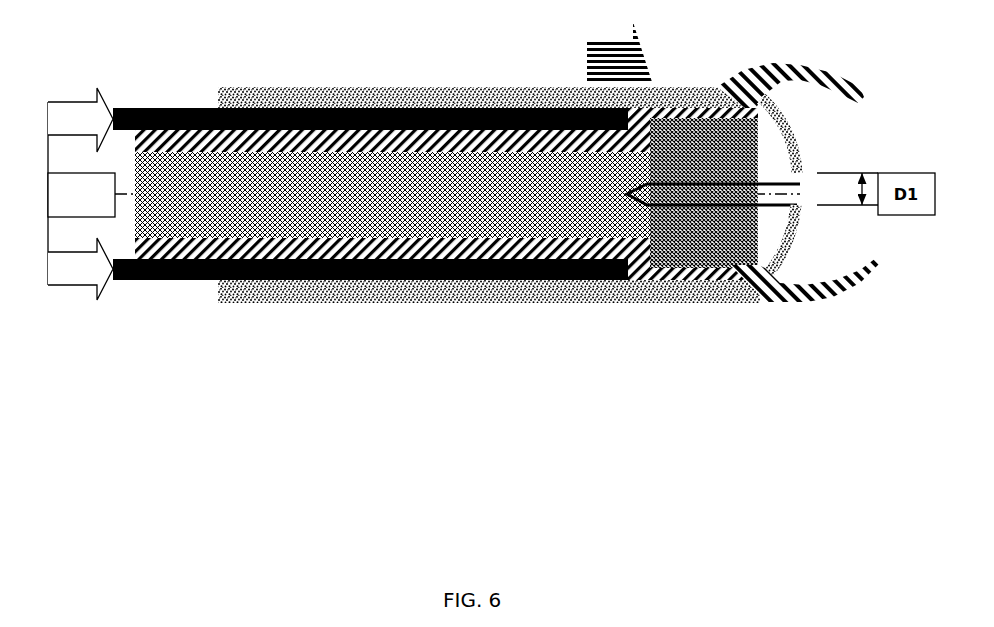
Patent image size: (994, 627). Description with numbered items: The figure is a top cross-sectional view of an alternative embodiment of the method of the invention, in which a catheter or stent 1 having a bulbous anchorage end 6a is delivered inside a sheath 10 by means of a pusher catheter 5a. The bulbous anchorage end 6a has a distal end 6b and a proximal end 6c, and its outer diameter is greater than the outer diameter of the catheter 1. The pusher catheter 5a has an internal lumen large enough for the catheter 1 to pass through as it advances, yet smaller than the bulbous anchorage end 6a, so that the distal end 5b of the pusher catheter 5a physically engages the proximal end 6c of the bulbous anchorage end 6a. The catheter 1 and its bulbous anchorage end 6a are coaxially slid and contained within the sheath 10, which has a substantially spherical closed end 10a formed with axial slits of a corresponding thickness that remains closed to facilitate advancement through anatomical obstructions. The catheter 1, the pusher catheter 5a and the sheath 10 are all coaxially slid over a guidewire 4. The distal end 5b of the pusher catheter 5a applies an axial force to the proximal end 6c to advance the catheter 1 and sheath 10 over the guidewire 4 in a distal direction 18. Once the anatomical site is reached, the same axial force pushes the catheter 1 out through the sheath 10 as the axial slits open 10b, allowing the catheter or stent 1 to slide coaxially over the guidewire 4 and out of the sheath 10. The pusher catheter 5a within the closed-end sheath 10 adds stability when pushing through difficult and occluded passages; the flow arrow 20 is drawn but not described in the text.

The catheter 1 is at (263, 283).
The guidewire 4 is at (348, 203).
The pusher catheter 5a is at (173, 108).
The distal end of pusher catheter 5b is at (637, 110).
The bulbous anchorage end 6a is at (673, 288).
The distal end of bulbous anchorage end 6b is at (763, 110).
The proximal end of bulbous anchorage end 6c is at (630, 285).
The sheath 10 is at (420, 102).
The closed end 10a is at (785, 243).
The opened axial slits 10b is at (808, 302).
The distal direction 18 is at (58, 212).
The flow direction 20 is at (818, 152).